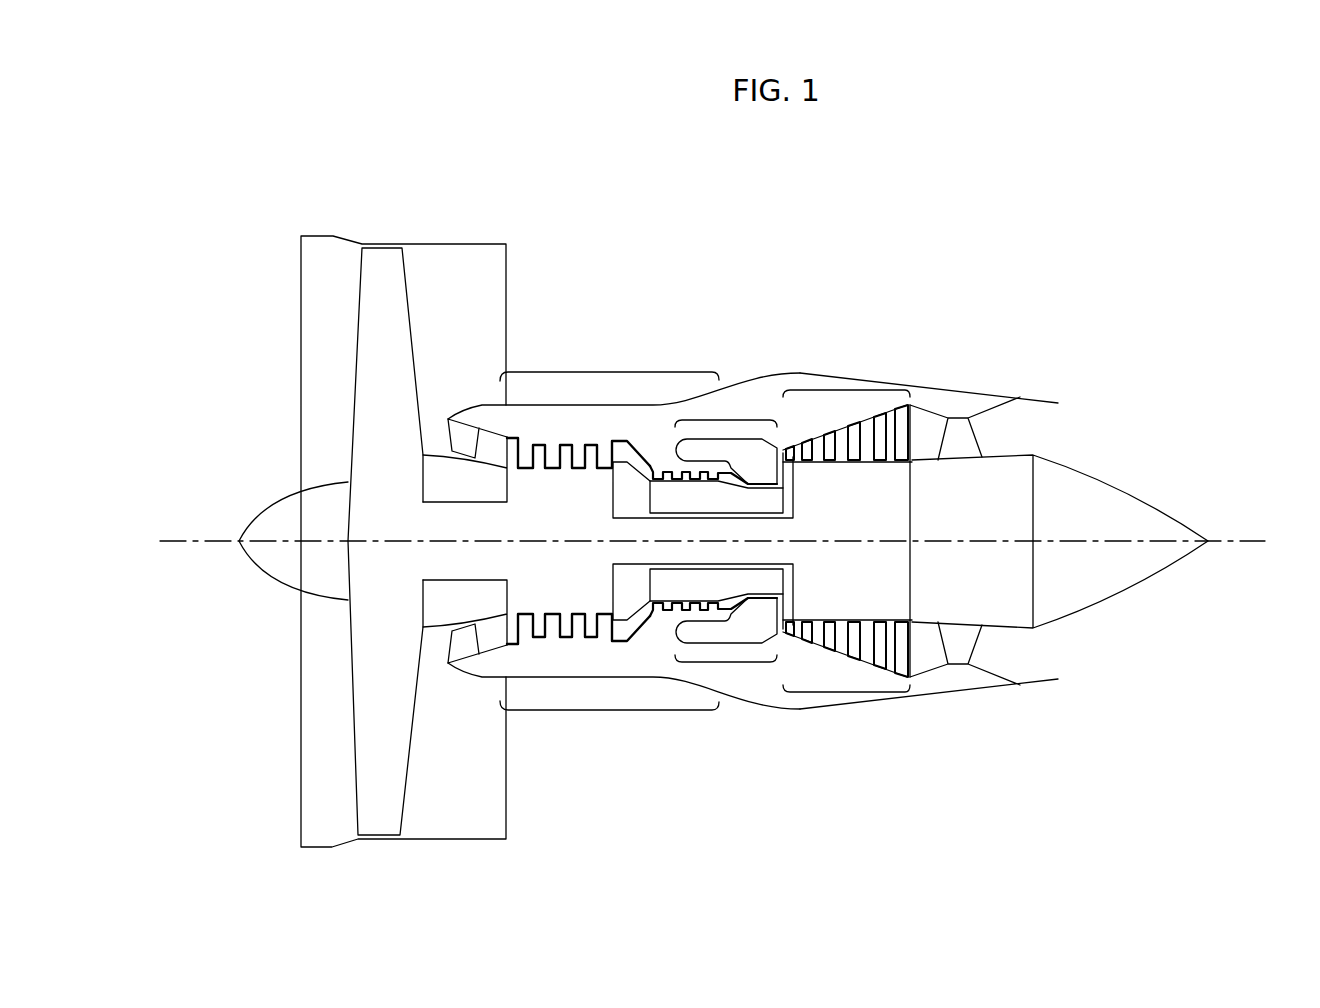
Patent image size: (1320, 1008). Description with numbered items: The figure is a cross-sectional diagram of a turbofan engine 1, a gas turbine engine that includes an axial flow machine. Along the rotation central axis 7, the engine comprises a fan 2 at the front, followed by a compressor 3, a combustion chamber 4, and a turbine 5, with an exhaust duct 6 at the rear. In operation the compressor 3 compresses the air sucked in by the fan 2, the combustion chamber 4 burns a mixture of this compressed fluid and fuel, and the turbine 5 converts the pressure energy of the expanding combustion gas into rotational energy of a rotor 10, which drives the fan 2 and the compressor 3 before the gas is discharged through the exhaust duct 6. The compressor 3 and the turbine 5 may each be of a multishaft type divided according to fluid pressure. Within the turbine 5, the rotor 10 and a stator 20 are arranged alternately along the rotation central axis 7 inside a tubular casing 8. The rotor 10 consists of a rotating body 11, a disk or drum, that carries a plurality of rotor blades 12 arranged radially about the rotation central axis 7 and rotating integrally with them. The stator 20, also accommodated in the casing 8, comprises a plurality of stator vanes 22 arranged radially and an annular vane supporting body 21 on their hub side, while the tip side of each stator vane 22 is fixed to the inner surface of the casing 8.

The turbofan engine 1 is at (712, 508).
The fan 2 is at (382, 270).
The compressor 3 is at (584, 371).
The combustion chamber 4 is at (745, 417).
The turbine 5 is at (853, 389).
The exhaust duct 6 is at (1023, 428).
The rotation central axis 7 is at (197, 541).
The tubular casing 8 is at (871, 403).
The rotor 10 is at (926, 634).
The rotating body 11 is at (893, 593).
The rotor blades 12 is at (910, 667).
The stator 20 is at (841, 670).
The vane supporting body 21 is at (809, 623).
The stator vanes 22 is at (809, 648).